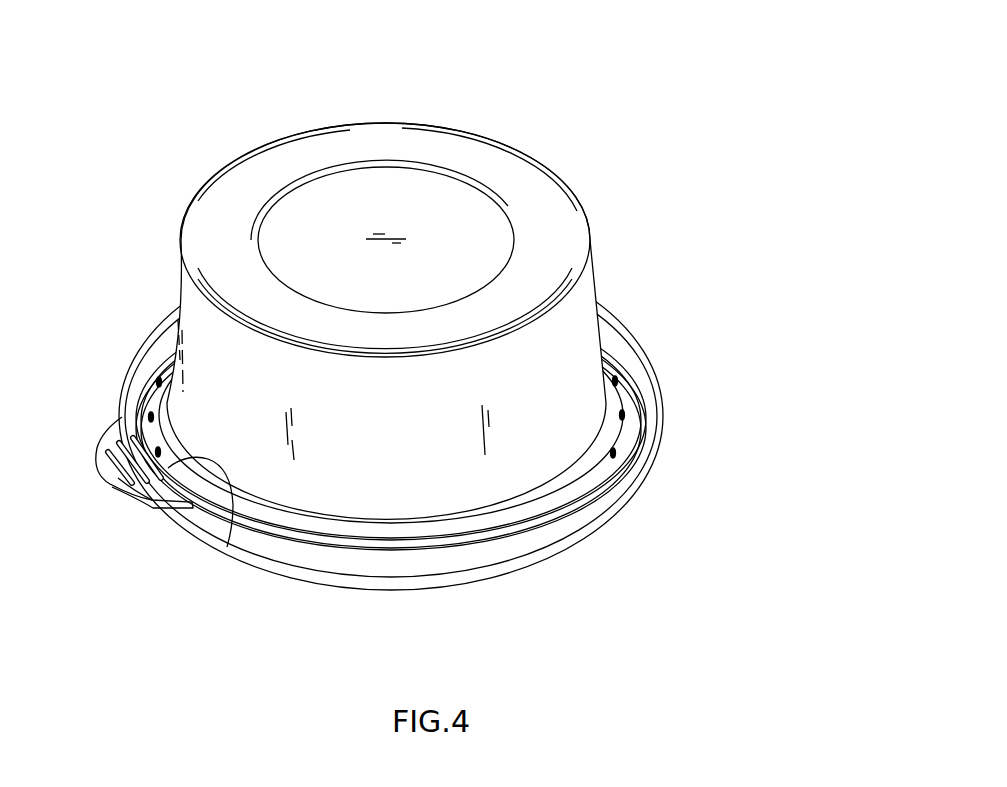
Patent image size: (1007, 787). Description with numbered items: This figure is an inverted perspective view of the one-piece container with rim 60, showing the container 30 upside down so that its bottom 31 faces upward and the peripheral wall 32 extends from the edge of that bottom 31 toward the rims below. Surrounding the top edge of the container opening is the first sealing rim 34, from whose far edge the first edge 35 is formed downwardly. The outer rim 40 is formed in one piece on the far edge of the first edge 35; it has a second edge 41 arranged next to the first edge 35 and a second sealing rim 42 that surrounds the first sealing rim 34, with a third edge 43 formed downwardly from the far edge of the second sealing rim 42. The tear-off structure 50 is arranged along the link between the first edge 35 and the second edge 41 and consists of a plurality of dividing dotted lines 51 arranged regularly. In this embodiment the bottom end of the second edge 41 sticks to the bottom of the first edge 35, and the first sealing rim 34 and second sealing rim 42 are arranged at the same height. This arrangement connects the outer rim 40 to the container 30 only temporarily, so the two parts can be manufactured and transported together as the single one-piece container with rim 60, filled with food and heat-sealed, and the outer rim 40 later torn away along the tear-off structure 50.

The one-piece container with rim 60 is at (641, 23).
The container 30 is at (409, 344).
The bottom 31 is at (410, 140).
The peripheral wall 32 is at (602, 298).
The first sealing rim 34 is at (163, 433).
The first edge 35 is at (232, 505).
The outer rim 40 is at (417, 436).
The second edge 41 is at (118, 453).
The second sealing rim 42 is at (143, 390).
The third edge 43 is at (487, 550).
The tear-off structure 50 is at (168, 367).
The dividing dotted lines 51 is at (151, 417).